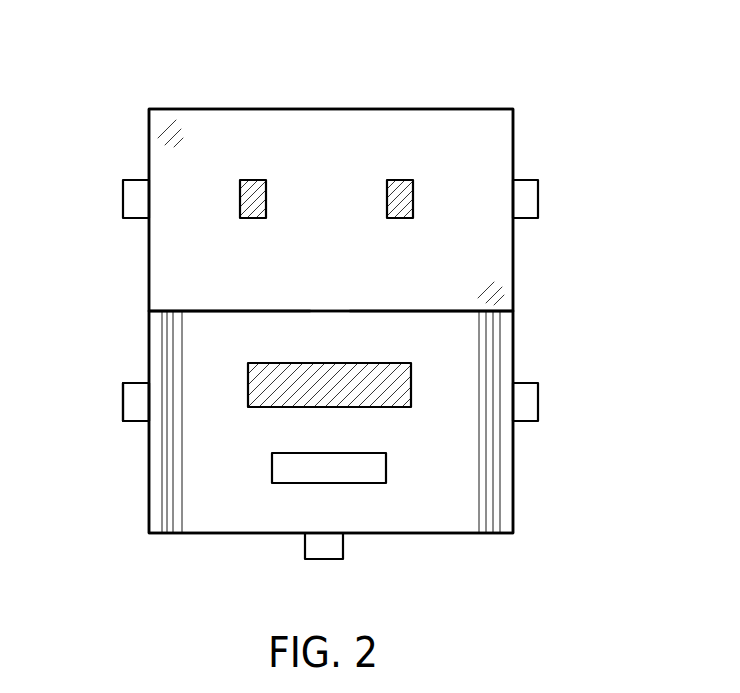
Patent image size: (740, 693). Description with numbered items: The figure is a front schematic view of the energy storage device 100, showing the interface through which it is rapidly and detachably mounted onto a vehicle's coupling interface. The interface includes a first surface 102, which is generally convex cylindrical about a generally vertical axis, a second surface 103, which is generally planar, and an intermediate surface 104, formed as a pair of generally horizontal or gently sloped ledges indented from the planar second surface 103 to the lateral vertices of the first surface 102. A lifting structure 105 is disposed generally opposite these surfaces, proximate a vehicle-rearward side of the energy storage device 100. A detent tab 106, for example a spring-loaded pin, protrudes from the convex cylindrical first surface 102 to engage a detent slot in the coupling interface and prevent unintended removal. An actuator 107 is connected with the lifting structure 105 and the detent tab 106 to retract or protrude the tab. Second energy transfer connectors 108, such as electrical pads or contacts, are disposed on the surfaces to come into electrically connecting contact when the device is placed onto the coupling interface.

The energy storage device 100 is at (313, 92).
The first surface 102 is at (452, 355).
The second surface 103 is at (483, 150).
The intermediate surface 104 is at (227, 316).
The lifting structure 105 is at (123, 402).
The detent tab 106 is at (386, 467).
The actuator 107 is at (322, 559).
The second energy transfer connectors 108 is at (240, 200).